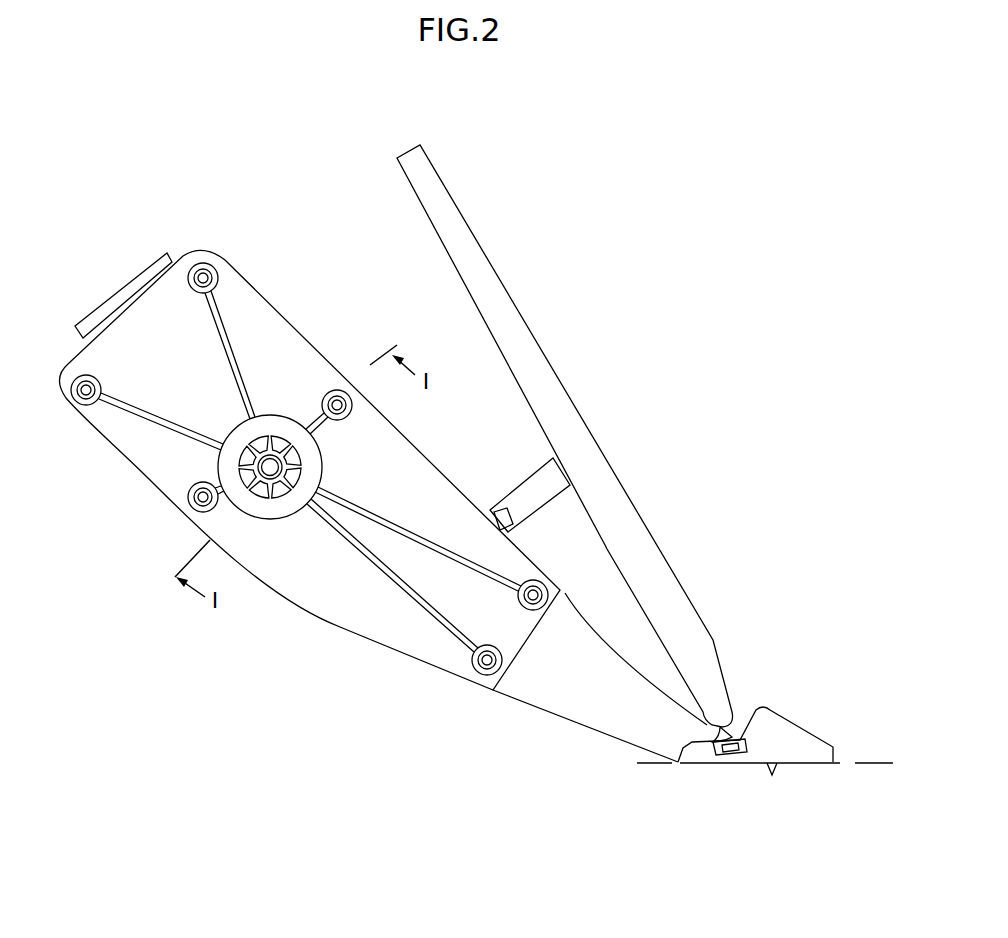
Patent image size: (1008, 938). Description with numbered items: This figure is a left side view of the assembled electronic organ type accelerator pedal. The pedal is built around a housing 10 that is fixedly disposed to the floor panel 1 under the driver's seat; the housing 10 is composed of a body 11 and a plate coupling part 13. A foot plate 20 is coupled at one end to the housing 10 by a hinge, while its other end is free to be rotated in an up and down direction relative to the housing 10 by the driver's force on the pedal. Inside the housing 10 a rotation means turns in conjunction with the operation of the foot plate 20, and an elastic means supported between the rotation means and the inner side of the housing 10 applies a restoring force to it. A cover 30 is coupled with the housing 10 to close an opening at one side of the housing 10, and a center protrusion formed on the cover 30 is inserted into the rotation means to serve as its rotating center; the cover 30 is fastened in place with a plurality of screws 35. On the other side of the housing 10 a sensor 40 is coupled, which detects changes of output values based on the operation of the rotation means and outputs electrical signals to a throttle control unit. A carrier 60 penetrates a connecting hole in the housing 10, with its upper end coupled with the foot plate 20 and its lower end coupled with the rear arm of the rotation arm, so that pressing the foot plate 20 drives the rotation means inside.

The floor panel 1 is at (860, 762).
The housing 10 is at (520, 710).
The body 11 is at (585, 718).
The plate coupling part 13 is at (785, 723).
The foot plate 20 is at (531, 306).
The cover 30 is at (287, 306).
The screws 35 is at (518, 594).
The sensor 40 is at (105, 291).
The carrier 60 is at (504, 487).